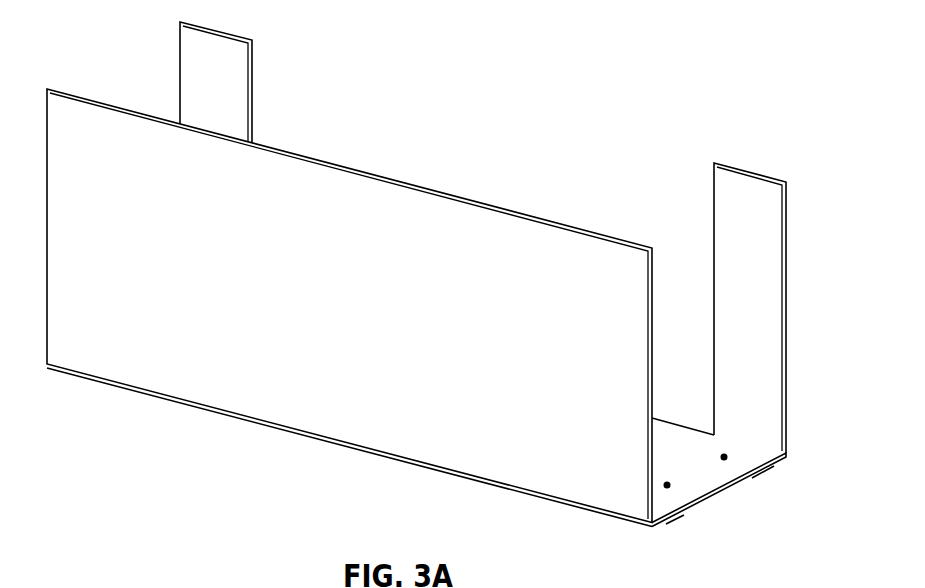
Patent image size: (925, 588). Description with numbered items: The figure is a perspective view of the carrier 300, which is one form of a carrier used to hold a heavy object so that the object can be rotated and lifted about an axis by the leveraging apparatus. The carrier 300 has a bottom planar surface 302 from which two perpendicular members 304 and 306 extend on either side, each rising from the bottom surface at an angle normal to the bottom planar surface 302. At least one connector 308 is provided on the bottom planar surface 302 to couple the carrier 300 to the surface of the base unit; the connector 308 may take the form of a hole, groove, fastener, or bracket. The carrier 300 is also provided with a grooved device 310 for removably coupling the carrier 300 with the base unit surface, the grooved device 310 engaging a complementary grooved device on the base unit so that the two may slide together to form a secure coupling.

The carrier 300 is at (545, 77).
The bottom planar surface 302 is at (683, 446).
The perpendicular member 304 is at (311, 326).
The perpendicular member 306 is at (232, 82).
The connector 308 is at (667, 485).
The grooved device 310 is at (670, 523).